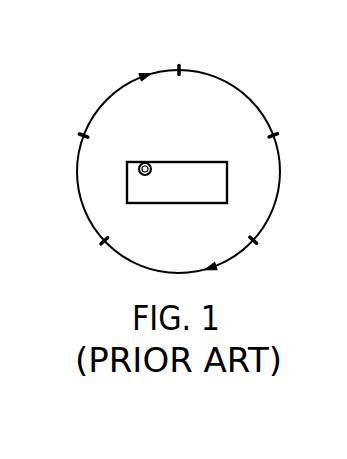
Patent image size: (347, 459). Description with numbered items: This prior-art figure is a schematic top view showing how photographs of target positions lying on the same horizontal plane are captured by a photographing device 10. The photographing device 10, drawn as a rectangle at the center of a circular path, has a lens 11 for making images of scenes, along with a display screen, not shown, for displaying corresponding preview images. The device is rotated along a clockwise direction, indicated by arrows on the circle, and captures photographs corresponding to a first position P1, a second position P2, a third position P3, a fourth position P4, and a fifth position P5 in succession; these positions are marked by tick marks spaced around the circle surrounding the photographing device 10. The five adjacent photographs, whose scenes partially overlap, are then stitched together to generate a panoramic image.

The photographing device 10 is at (160, 191).
The lens 11 is at (150, 160).
The first position P1 is at (178, 59).
The second position P2 is at (286, 136).
The third position P3 is at (266, 253).
The fourth position P4 is at (91, 250).
The fifth position P5 is at (68, 136).